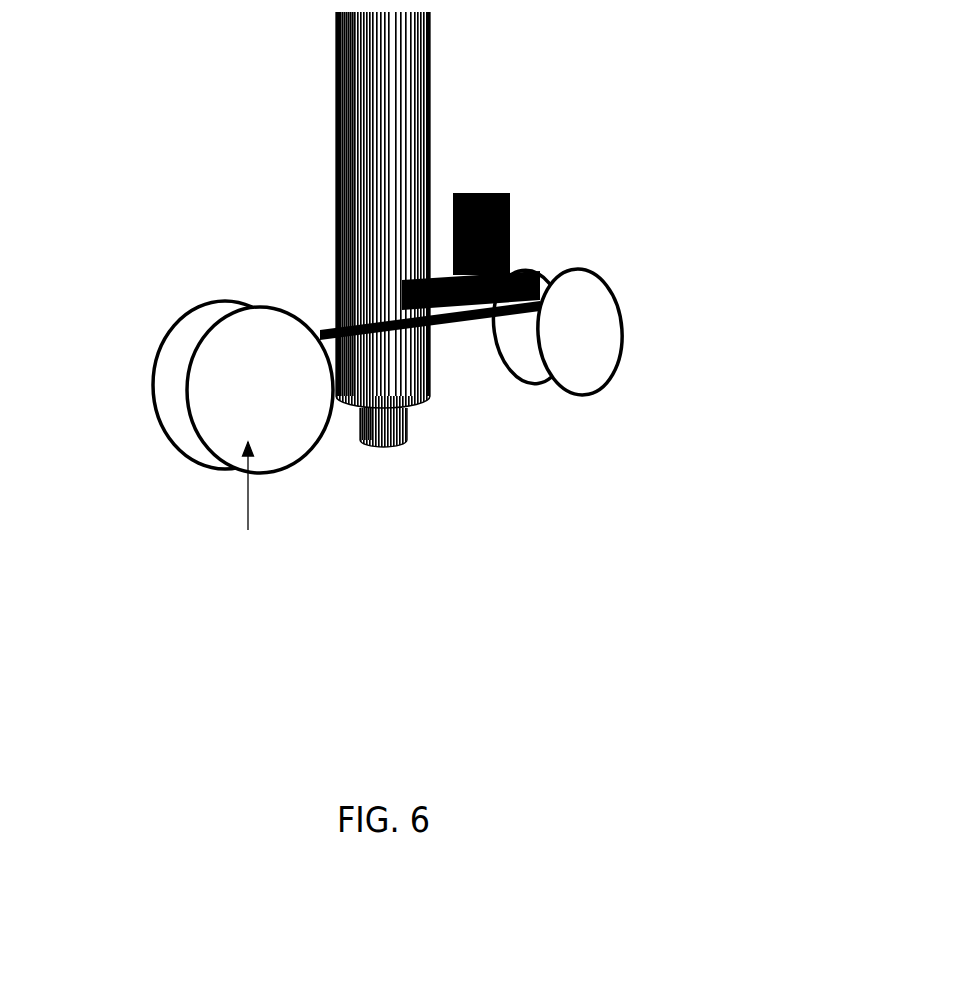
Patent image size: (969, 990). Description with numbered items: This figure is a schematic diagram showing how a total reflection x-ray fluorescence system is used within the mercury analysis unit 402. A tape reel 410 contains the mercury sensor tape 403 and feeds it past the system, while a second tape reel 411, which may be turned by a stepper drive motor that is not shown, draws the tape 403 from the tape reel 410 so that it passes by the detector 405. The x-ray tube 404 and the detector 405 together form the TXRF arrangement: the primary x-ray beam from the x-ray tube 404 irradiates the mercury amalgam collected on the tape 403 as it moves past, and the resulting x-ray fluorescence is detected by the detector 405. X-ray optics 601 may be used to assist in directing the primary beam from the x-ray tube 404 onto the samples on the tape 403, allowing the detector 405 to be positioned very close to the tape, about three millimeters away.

The mercury analysis unit 402 is at (693, 203).
The mercury sensor tape 403 is at (455, 335).
The x-ray tube 404 is at (387, 107).
The detector 405 is at (478, 190).
The tape reel 410 is at (150, 382).
The tape reel 411 is at (622, 311).
The x-ray optics 601 is at (422, 272).